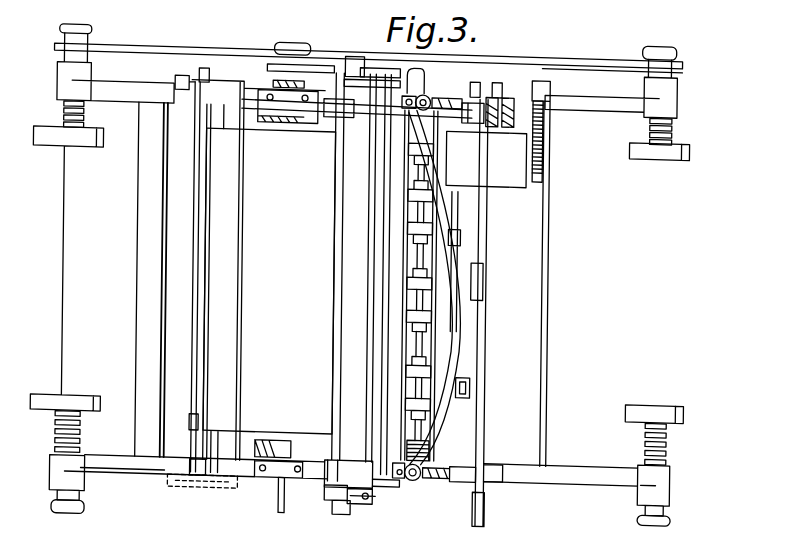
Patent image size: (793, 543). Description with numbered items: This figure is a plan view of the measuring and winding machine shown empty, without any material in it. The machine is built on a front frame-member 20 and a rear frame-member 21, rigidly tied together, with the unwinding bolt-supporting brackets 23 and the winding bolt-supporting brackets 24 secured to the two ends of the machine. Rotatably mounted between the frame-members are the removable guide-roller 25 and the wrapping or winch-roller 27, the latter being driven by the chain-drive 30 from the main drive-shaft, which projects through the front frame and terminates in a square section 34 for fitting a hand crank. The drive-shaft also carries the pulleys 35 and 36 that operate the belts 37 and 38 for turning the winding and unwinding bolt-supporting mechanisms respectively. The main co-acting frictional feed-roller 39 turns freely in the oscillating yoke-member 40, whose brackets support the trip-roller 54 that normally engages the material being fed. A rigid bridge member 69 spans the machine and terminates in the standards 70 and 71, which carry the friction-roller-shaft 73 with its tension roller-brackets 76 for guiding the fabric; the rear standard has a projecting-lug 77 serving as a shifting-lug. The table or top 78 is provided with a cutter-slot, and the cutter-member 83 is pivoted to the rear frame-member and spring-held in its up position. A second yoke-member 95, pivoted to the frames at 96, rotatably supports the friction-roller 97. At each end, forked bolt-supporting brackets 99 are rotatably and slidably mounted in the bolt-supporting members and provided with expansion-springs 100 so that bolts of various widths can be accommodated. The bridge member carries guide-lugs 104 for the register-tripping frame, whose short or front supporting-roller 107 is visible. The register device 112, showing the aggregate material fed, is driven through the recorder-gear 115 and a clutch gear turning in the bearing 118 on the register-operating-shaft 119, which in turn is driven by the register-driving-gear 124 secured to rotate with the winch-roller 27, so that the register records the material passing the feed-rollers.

The front frame-member 20 is at (251, 470).
The rear frame-member 21 is at (546, 97).
The unwinding bolt-supporting brackets 23 is at (112, 95).
The winding bolt-supporting brackets 24 is at (594, 103).
The removable guide-roller 25 is at (145, 322).
The wrapping or winch-roller 27 is at (269, 281).
The chain-drive 30 is at (258, 78).
The square section 34 is at (280, 506).
The pulley 35 is at (323, 56).
The pulley 36 is at (287, 43).
The belt 37 is at (566, 69).
The belt 38 is at (131, 45).
The main co-acting frictional feed-roller 39 is at (360, 345).
The yoke-member 40 is at (381, 313).
The trip-roller 54 is at (336, 384).
The bridge member 69 is at (433, 427).
The standard 70 is at (439, 479).
The standard 71 is at (445, 93).
The friction-roller-shaft 73 is at (418, 254).
The tension roller-brackets 76 is at (468, 380).
The projecting-lug 77 is at (404, 68).
The table or top 78 is at (536, 264).
The cutter-member 83 is at (486, 428).
The yoke-member 95 is at (197, 422).
The pivot 96 is at (178, 80).
The friction-roller 97 is at (216, 222).
The bolt-supporting brackets 99 is at (45, 398).
The expansion-springs 100 is at (674, 129).
The guide-lugs 104 is at (462, 229).
The short or front supporting-roller 107 is at (483, 288).
The register device 112 is at (486, 159).
The recorder-gear 115 is at (543, 172).
The bearing 118 is at (512, 95).
The recorder-operating-shaft 119 is at (350, 130).
The register-driving-gear 124 is at (270, 126).